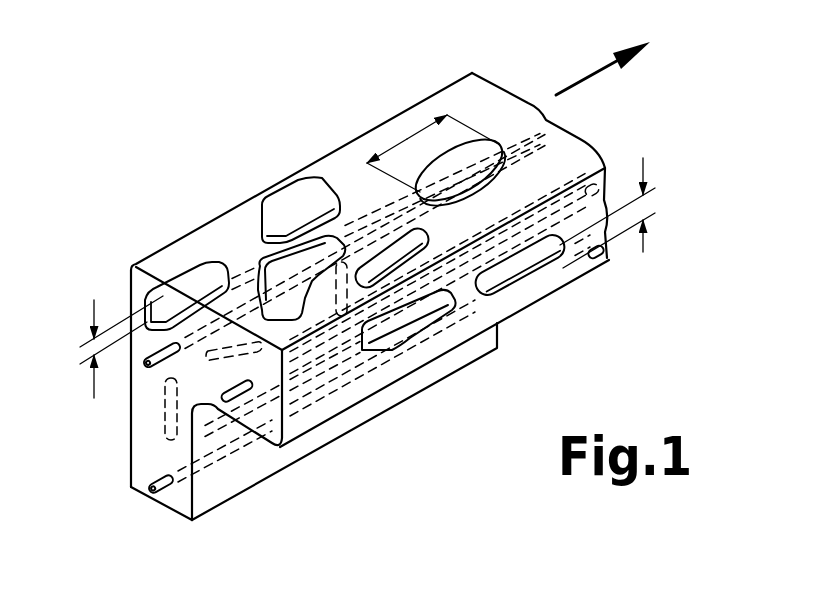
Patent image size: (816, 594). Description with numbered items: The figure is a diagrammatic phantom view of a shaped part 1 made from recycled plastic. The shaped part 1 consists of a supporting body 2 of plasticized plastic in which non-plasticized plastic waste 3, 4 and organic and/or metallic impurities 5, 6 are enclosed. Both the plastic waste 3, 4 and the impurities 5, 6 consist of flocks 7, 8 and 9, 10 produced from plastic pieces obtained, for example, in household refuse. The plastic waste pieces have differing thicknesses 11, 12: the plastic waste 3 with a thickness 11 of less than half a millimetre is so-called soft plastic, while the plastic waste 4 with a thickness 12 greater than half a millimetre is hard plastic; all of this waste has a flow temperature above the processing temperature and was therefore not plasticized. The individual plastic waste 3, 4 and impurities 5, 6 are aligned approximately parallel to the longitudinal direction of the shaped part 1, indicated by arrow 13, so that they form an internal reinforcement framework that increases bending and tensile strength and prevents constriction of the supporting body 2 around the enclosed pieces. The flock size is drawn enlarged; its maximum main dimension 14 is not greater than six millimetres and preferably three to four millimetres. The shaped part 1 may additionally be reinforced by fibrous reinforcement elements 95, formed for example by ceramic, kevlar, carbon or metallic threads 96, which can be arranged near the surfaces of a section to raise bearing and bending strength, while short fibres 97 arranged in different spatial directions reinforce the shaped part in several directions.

The shaped part 1 is at (145, 156).
The supporting body 2 is at (447, 363).
The plastic waste 3 is at (599, 253).
The plastic waste 4 is at (172, 265).
The impurity 5 is at (360, 242).
The impurity 6 is at (258, 211).
The flock 7 is at (537, 257).
The flock 8 is at (198, 283).
The flock 9 is at (388, 263).
The flock 10 is at (297, 205).
The thickness 11 is at (650, 243).
The thickness 12 is at (90, 340).
The longitudinal direction arrow 13 is at (571, 79).
The main dimension 14 is at (405, 135).
The fibrous reinforcement elements 95 is at (131, 380).
The threads 96 is at (166, 490).
The short fibres 97 is at (166, 412).